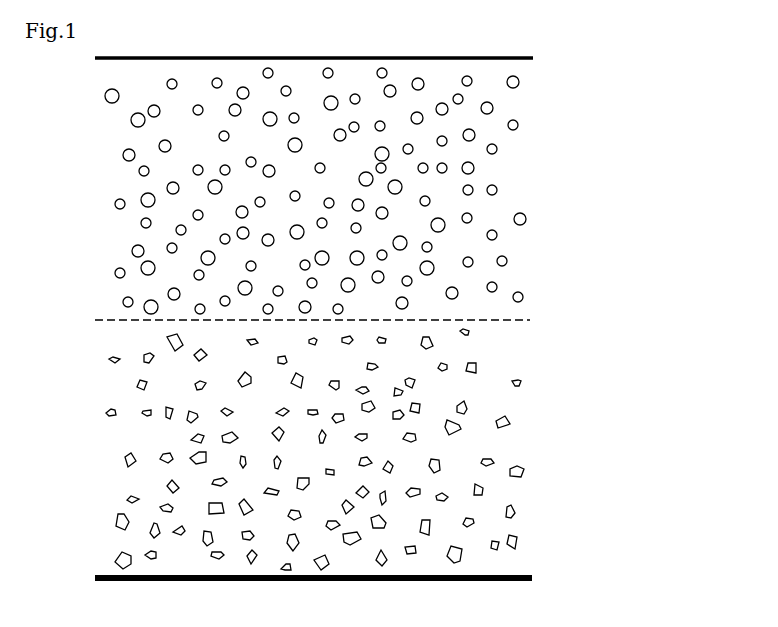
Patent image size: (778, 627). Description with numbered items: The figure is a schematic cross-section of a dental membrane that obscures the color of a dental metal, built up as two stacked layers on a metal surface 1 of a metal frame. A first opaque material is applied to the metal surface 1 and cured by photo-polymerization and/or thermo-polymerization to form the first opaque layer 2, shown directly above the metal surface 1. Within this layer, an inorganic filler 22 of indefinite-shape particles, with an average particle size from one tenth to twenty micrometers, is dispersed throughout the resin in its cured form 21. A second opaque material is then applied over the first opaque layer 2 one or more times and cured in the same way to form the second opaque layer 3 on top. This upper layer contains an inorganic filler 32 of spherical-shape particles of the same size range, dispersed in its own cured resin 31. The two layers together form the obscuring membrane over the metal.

The metal surface 1 is at (533, 574).
The first opaque layer 2 is at (93, 325).
The resin in the cured form 21 is at (521, 445).
The inorganic filler of indefinite form 22 is at (523, 383).
The second opaque layer 3 is at (93, 61).
The resin in the cured form 31 is at (521, 200).
The inorganic filler of spherical-shape particles 32 is at (521, 123).